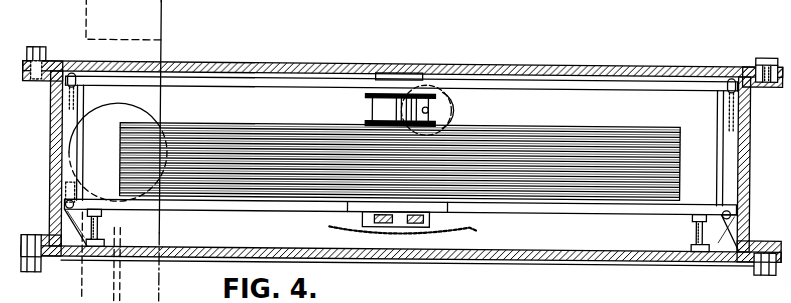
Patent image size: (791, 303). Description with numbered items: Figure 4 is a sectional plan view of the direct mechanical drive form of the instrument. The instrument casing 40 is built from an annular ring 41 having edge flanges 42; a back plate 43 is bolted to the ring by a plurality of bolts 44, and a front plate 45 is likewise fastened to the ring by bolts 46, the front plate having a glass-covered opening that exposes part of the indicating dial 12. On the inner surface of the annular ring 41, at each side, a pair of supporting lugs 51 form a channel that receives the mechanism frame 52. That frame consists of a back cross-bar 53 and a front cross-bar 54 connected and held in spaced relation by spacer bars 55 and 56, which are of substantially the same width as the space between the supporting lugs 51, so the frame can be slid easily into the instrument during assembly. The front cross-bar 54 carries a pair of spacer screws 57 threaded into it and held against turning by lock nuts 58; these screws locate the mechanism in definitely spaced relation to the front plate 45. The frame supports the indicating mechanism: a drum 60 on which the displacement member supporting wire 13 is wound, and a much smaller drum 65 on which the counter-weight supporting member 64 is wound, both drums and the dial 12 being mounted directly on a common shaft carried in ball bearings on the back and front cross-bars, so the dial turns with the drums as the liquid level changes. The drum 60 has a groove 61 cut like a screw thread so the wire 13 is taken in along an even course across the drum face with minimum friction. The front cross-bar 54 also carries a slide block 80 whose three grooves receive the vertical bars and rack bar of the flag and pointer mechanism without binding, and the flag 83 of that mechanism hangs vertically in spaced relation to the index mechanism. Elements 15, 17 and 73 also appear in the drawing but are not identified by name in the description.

The indicating dial 12 is at (687, 195).
The displacement member supporting wire 13 is at (122, 156).
The section line 15 is at (163, 9).
The spindle assembly 17 is at (440, 95).
The instrument casing 40 is at (602, 70).
The annular ring 41 is at (746, 154).
The edge flanges 42 is at (750, 247).
The back plate 43 is at (690, 67).
The bolts 44 is at (766, 60).
The front plate 45 is at (585, 256).
The bolts 46 is at (757, 267).
The supporting lugs 51 is at (745, 218).
The mechanism frame 52 is at (255, 83).
The back cross-bar 53 is at (174, 82).
The front cross-bar 54 is at (234, 206).
The spacer bar 55 is at (730, 128).
The spacer bar 56 is at (72, 115).
The spacer screws 57 is at (696, 241).
The lock nuts 58 is at (694, 219).
The drum 60 is at (219, 152).
The groove 61 is at (559, 133).
The counter-weight supporting member 64 is at (446, 111).
The drum 65 is at (371, 110).
The support block 73 is at (398, 218).
The slide block 80 is at (409, 219).
The flag 83 is at (477, 229).